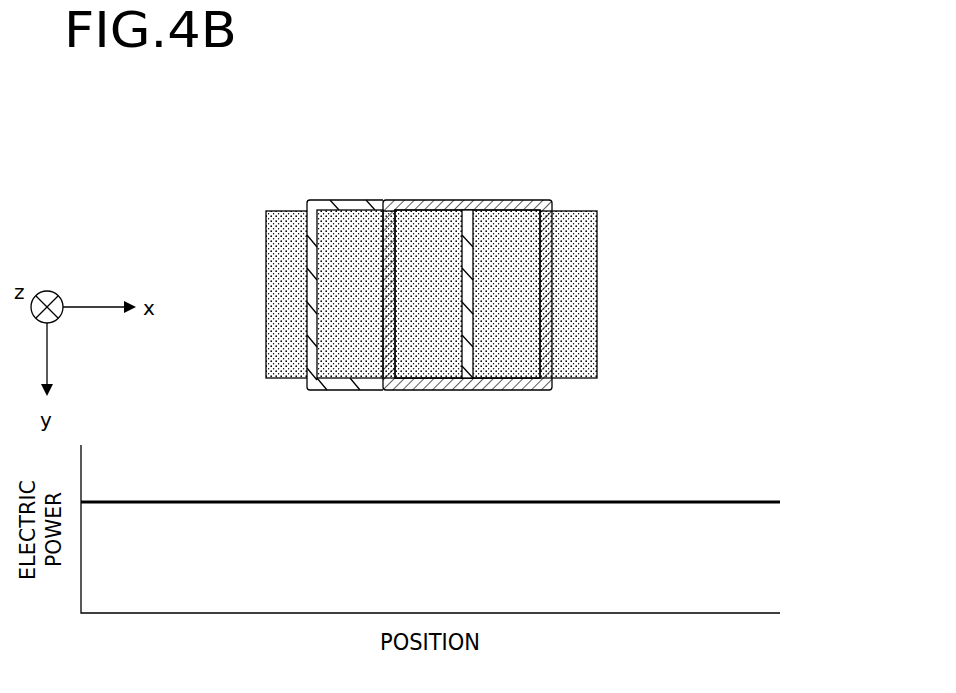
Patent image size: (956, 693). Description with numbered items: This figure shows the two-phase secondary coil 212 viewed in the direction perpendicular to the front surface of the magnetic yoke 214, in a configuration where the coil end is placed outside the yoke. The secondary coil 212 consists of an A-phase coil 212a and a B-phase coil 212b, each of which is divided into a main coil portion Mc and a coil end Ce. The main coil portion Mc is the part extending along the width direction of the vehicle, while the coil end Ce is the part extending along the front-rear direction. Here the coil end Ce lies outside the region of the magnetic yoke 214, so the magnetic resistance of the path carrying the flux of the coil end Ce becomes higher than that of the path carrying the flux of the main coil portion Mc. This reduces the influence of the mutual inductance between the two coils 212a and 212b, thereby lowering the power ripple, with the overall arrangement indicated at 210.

The substrate support assembly 210 is at (487, 223).
The secondary coil 212 is at (424, 223).
The A-phase coil 212a is at (342, 210).
The B-phase coil 212b is at (467, 252).
The magnetic yoke 214 is at (593, 152).
The main coil portion Mc is at (568, 213).
The coil end Ce is at (552, 392).